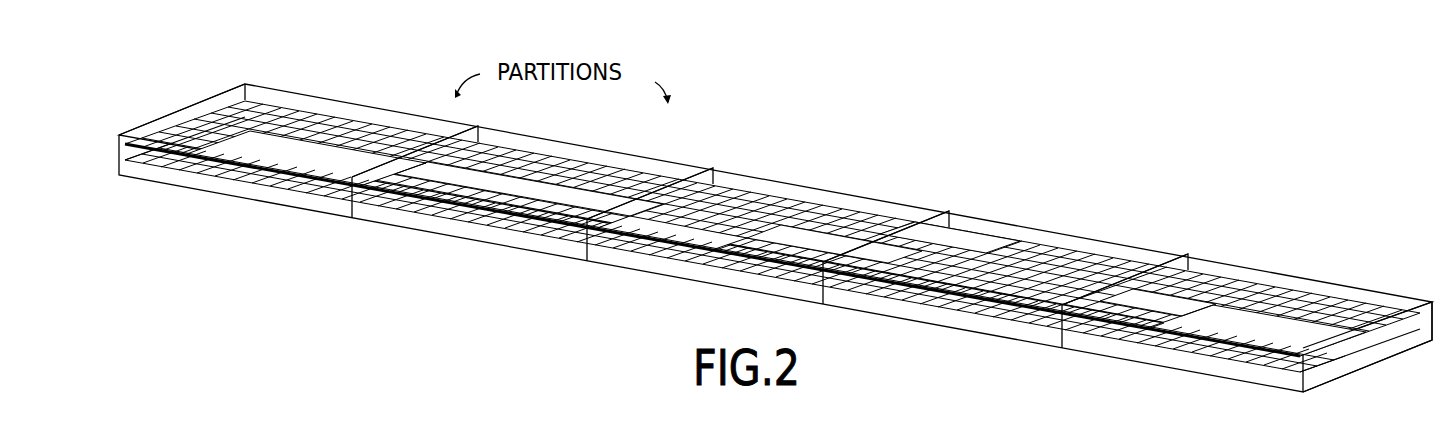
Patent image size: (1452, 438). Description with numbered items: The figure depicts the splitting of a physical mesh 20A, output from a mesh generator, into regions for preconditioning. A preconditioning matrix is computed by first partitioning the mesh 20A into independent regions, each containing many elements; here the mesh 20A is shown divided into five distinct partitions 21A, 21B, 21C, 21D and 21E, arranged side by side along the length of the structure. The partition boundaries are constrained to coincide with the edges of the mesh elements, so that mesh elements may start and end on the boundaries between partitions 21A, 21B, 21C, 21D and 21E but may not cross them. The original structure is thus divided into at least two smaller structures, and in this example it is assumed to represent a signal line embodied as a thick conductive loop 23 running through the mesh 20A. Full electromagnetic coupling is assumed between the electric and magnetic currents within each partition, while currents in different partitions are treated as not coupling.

The mesh 20A is at (1050, 244).
The partition 21A is at (375, 107).
The partition 21B is at (606, 149).
The partition 21C is at (850, 193).
The partition 21D is at (1092, 238).
The partition 21E is at (1328, 282).
The thick conductive loop 23 is at (623, 244).